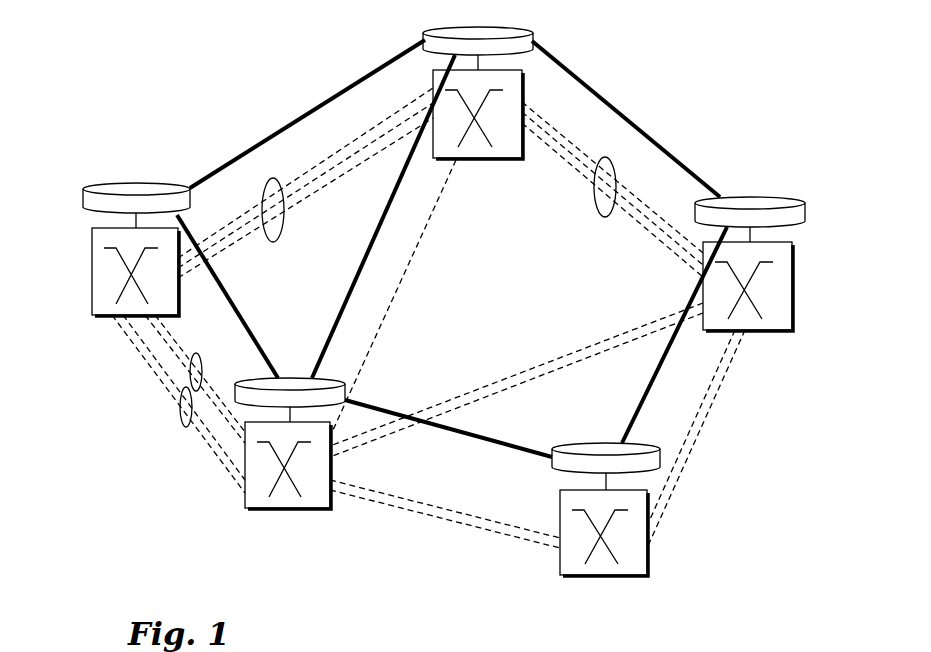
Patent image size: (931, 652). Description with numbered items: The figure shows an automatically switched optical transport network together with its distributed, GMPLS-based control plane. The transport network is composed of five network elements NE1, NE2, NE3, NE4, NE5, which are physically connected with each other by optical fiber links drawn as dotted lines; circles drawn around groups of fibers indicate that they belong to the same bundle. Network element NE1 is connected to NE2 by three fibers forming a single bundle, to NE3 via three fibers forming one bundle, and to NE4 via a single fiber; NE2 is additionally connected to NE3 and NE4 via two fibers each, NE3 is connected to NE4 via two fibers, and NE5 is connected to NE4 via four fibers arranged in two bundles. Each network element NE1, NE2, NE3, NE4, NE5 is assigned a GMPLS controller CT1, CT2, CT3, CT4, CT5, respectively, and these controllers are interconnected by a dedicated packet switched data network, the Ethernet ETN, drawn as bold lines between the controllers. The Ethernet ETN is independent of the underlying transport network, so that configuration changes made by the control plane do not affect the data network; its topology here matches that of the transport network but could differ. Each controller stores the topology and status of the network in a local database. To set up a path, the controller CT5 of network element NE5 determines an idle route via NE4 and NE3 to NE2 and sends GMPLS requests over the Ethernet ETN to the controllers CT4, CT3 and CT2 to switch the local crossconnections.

The Ethernet ETN is at (280, 127).
The GMPLS controller CT1 is at (491, 26).
The GMPLS controller CT2 is at (748, 205).
The GMPLS controller CT3 is at (658, 447).
The GMPLS controller CT4 is at (337, 383).
The GMPLS controller CT5 is at (138, 192).
The network element NE1 is at (521, 78).
The network element NE2 is at (794, 287).
The network element NE3 is at (648, 562).
The network element NE4 is at (325, 508).
The network element NE5 is at (102, 300).